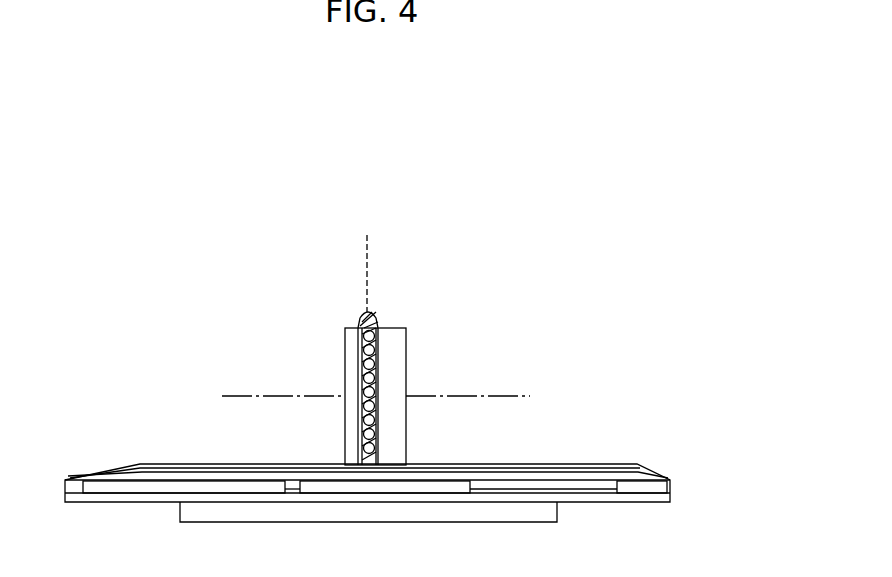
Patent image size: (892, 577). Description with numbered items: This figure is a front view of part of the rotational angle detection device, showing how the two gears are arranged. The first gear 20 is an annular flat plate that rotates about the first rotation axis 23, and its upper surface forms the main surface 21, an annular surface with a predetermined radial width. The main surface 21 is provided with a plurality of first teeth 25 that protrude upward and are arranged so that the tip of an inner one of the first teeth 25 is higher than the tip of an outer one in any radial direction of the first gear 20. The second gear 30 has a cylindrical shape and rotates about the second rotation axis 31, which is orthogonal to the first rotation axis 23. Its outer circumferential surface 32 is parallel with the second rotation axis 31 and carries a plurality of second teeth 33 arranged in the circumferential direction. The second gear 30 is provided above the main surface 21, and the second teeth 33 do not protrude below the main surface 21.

The first gear 20 is at (638, 450).
The main surface 21 is at (655, 488).
The first rotation axis 23 is at (370, 254).
The first teeth 25 is at (160, 468).
The second gear 30 is at (417, 346).
The second rotation axis 31 is at (505, 396).
The outer circumferential surface 32 is at (358, 325).
The second teeth 33 is at (362, 412).